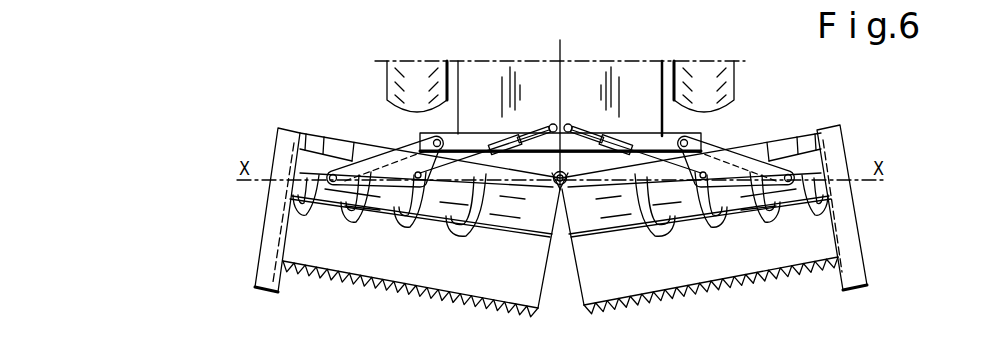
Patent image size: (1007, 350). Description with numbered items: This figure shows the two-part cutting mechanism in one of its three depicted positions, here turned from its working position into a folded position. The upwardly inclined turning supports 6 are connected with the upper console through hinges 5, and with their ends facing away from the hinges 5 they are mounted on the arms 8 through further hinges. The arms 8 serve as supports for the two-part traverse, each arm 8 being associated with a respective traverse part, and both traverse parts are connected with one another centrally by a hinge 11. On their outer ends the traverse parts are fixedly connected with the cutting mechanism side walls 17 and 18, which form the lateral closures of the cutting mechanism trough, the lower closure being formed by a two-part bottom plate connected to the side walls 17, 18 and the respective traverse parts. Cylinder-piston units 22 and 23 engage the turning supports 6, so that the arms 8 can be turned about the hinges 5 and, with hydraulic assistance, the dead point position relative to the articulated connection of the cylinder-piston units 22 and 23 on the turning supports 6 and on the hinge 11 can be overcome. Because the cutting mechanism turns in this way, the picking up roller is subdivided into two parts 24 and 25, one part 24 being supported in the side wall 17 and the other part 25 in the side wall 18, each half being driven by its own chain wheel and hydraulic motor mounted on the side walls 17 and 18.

The hinge 5 is at (420, 133).
The turning support 6 is at (380, 167).
The arm 8 is at (330, 168).
The hinge 11 is at (562, 97).
The cutting mechanism side wall 17 is at (832, 225).
The cutting mechanism side wall 18 is at (288, 230).
The cylinder-piston unit 22 is at (700, 269).
The cylinder-piston unit 23 is at (421, 269).
The picking up roller part 24 is at (627, 217).
The picking up roller part 25 is at (445, 210).